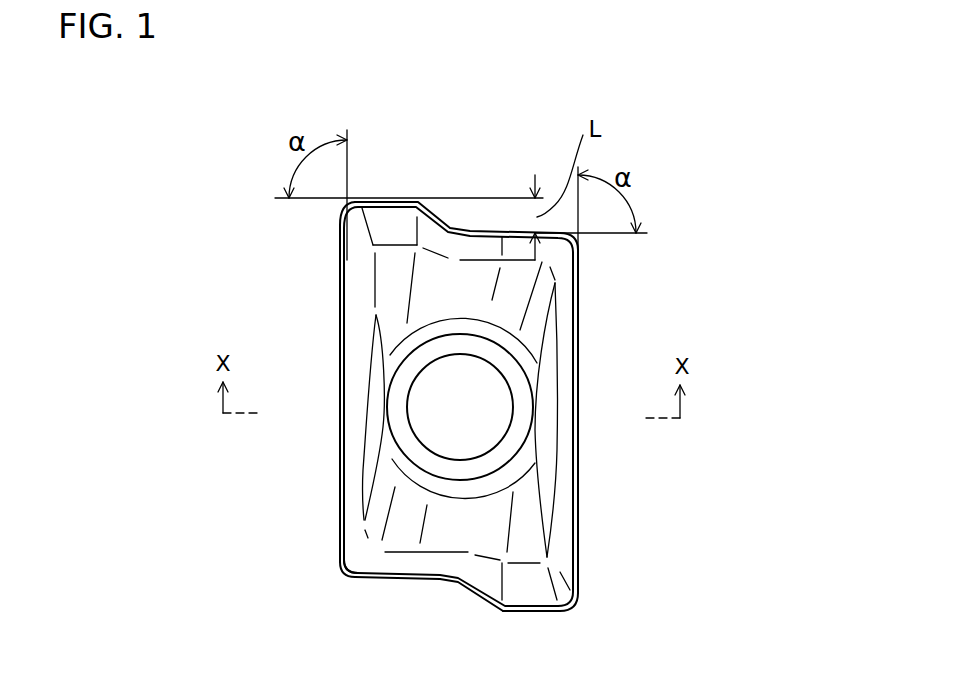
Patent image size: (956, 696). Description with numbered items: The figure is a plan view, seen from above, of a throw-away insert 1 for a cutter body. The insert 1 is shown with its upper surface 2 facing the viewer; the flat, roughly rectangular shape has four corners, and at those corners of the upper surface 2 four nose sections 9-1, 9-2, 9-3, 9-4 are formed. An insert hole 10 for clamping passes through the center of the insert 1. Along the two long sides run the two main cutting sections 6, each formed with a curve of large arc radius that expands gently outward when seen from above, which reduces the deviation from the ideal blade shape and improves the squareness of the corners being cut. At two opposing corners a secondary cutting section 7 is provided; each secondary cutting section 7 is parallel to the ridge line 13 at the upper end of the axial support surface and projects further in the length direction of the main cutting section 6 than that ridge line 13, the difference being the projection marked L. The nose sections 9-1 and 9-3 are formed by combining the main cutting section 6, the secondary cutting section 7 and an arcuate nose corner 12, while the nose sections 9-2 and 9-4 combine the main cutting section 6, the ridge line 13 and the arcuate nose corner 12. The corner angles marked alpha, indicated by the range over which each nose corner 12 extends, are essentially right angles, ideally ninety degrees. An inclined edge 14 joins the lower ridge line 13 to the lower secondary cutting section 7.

The throw-away insert 1 is at (520, 160).
The upper surface 2 is at (518, 315).
The main cutting section 6 is at (338, 439).
The secondary cutting section 7 is at (383, 198).
The nose section 9-1 is at (337, 222).
The nose section 9-2 is at (587, 247).
The nose section 9-3 is at (573, 610).
The nose section 9-4 is at (347, 582).
The insert hole 10 is at (417, 428).
The arcuate nose corner 12 is at (343, 565).
The ridge line 13 is at (397, 580).
The inclined cutting edge 14 is at (473, 593).